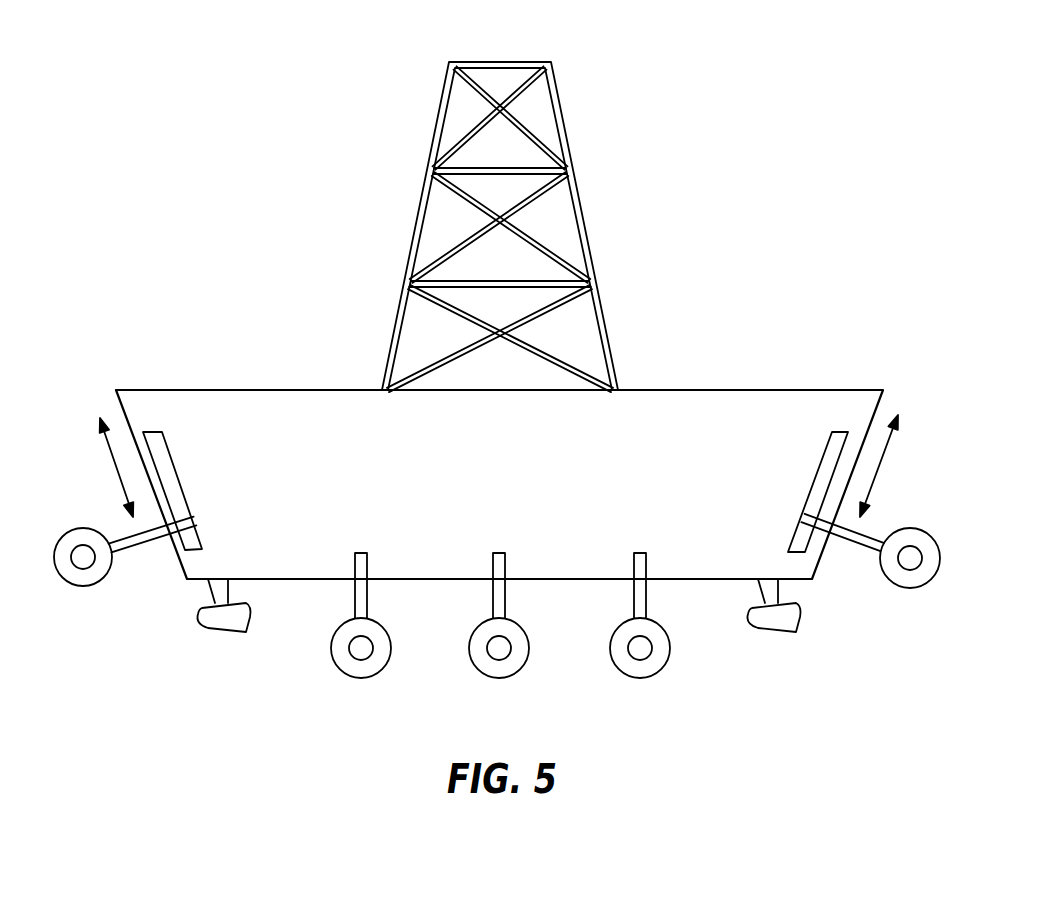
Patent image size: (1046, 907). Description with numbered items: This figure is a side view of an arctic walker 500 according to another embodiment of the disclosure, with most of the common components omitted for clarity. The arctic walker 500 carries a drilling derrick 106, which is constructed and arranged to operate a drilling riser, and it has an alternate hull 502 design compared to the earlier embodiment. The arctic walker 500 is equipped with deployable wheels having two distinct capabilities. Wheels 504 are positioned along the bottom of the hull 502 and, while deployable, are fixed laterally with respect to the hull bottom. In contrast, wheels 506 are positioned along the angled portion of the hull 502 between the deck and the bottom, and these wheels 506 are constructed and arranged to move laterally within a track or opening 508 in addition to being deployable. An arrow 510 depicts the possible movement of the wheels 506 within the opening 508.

The arctic walker 500 is at (343, 45).
The drilling derrick 106 is at (562, 115).
The hull 502 is at (693, 388).
The wheels 504 is at (653, 620).
The wheels 506 is at (897, 527).
The track or opening 508 is at (818, 467).
The arrow 510 is at (118, 472).